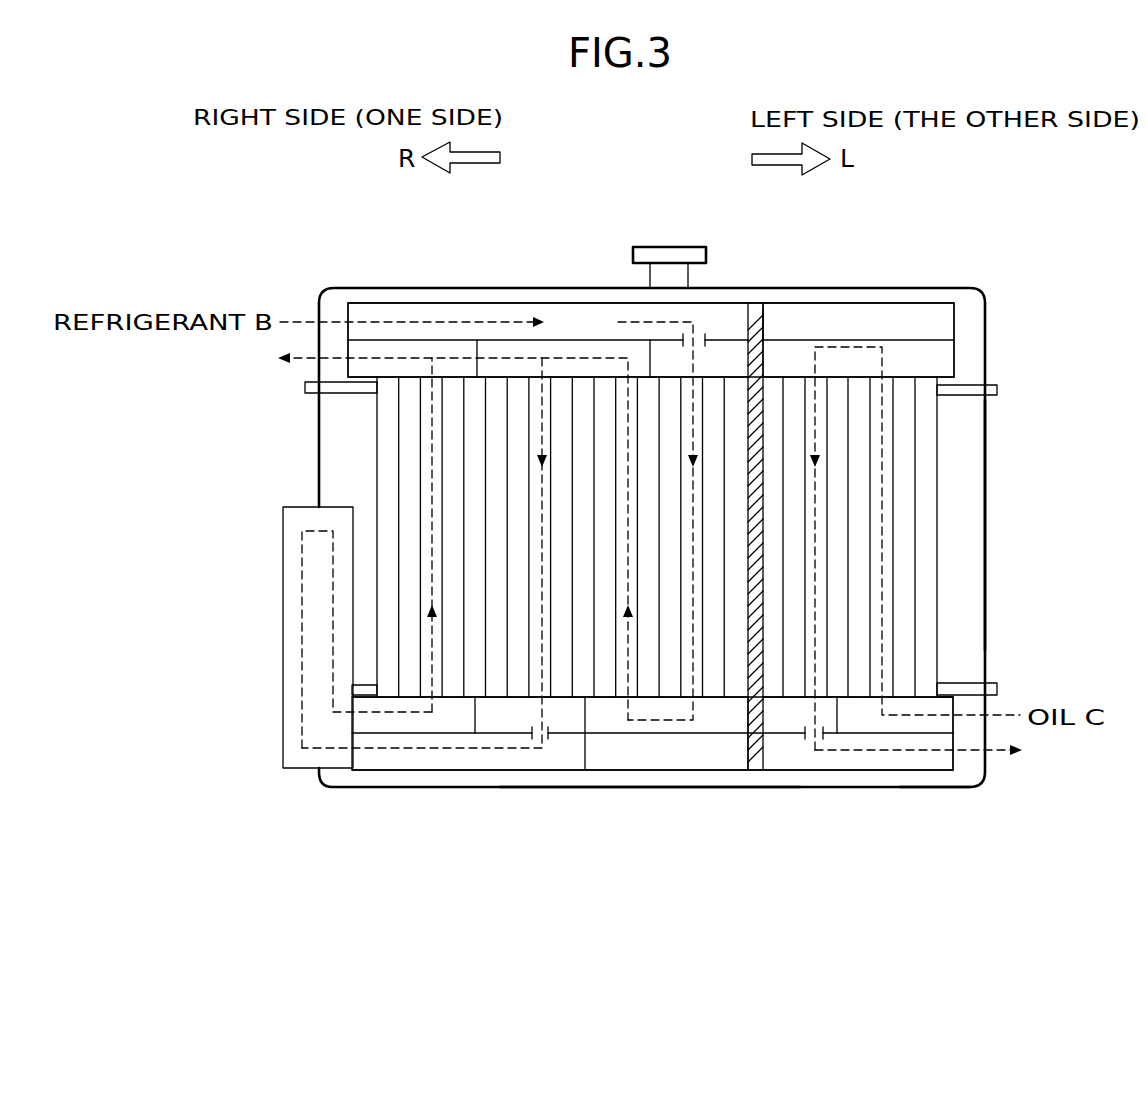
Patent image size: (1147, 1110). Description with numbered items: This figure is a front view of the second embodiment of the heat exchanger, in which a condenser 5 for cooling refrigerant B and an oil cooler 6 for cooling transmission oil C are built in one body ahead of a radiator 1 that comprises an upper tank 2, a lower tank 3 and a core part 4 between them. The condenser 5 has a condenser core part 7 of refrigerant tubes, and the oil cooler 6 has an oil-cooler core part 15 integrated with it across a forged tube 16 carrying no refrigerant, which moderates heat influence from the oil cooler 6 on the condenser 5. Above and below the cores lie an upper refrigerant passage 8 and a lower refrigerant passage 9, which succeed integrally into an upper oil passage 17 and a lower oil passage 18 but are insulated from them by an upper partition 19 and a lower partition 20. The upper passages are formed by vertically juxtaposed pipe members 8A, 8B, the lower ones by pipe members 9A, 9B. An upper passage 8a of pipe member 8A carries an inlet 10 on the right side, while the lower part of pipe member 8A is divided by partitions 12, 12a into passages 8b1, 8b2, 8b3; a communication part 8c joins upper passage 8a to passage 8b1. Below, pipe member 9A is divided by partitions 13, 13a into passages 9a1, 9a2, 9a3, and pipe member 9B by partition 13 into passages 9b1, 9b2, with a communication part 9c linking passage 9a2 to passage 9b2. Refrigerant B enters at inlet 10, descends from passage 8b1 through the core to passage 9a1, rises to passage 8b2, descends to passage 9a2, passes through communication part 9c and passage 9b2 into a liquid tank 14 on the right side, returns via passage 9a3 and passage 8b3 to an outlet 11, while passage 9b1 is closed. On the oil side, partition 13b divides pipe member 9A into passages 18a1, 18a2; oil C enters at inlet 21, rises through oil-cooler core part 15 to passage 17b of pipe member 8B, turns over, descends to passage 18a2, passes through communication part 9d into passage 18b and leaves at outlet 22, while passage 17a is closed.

The radiator 1 is at (626, 245).
The upper tank 2 is at (922, 292).
The lower tank 3 is at (647, 790).
The core part 4 is at (967, 458).
The condenser 5 is at (425, 262).
The oil cooler 6 is at (868, 270).
The condenser core part 7 is at (385, 430).
The upper refrigerant passage 8 is at (553, 300).
The pipe member 8A is at (397, 302).
The pipe member 8B is at (340, 390).
The upper passage 8a is at (592, 335).
The passage 8b1 is at (746, 372).
The passage 8b2 is at (528, 372).
The passage 8b3 is at (473, 372).
The communication part 8c is at (700, 332).
The lower refrigerant passage 9 is at (430, 770).
The pipe member 9A is at (365, 689).
The pipe member 9B is at (368, 770).
The passage 9a1 is at (708, 720).
The passage 9a2 is at (510, 723).
The passage 9a3 is at (453, 720).
The passage 9b1 is at (672, 764).
The passage 9b2 is at (393, 758).
The communication part 9c is at (543, 738).
The communication part 9d is at (815, 737).
The inlet 10 is at (347, 313).
The outlet 11 is at (345, 342).
The partition 12 is at (492, 340).
The partition 12a is at (653, 363).
The partition 13 is at (583, 755).
The partition 13a is at (480, 715).
The partition 13b is at (836, 720).
The liquid tank 14 is at (283, 598).
The oil-cooler core part 15 is at (927, 573).
The forged tube 16 is at (760, 520).
The upper oil passage 17 is at (955, 337).
The passage 17a is at (826, 330).
The passage 17b is at (918, 360).
The lower oil passage 18 is at (915, 775).
The passage 18a1 is at (857, 720).
The passage 18a2 is at (777, 720).
The passage 18b is at (932, 767).
The upper partition 19 is at (772, 330).
The lower partition 20 is at (745, 743).
The inlet 21 is at (960, 700).
The outlet 22 is at (957, 767).